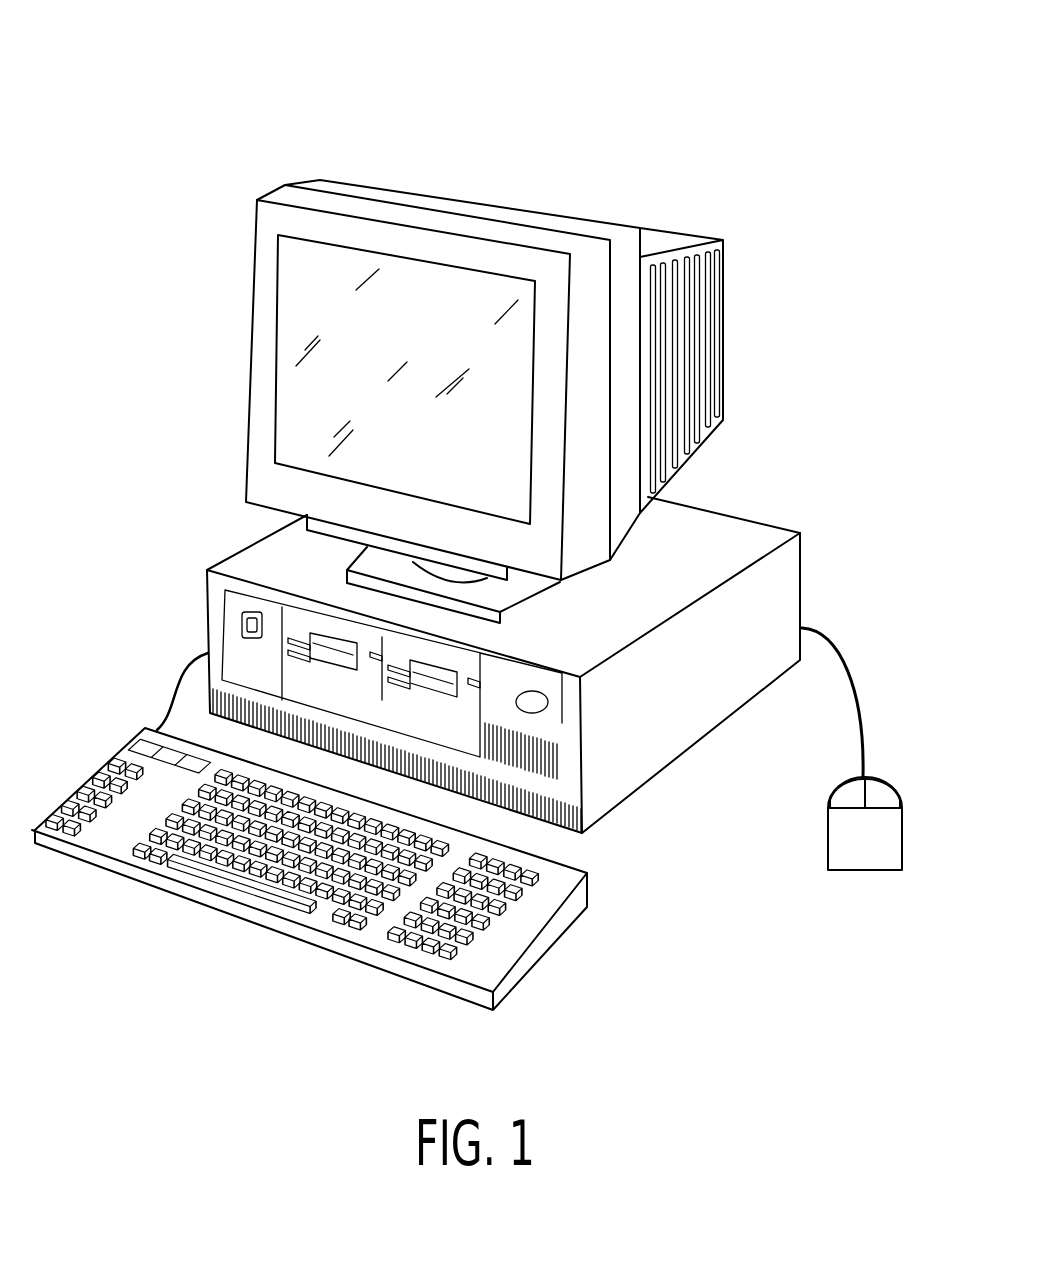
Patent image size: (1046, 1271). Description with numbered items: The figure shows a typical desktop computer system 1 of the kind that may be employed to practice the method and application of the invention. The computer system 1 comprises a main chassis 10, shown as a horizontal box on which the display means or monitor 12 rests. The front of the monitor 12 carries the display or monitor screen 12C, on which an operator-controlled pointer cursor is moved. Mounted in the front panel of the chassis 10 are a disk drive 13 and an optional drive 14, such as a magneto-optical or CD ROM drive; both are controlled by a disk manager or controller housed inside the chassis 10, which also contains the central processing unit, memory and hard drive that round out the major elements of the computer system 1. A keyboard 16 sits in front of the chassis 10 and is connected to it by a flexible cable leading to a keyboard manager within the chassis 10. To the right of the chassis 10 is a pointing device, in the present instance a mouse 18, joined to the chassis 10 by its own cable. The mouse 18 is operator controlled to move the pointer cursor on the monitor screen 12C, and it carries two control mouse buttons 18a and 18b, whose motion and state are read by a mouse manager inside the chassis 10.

The computer system 1 is at (432, 153).
The main chassis 10 is at (787, 527).
The monitor 12 is at (723, 293).
The monitor screen 12C is at (318, 313).
The disk drive 13 is at (335, 640).
The optional drive 14 is at (470, 668).
The keyboard 16 is at (422, 977).
The mouse 18 is at (868, 873).
The mouse button 18a is at (848, 790).
The mouse button 18b is at (882, 790).